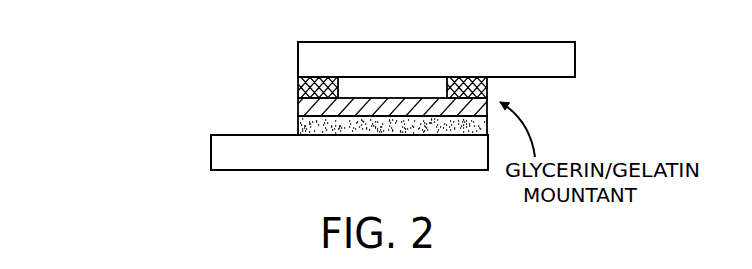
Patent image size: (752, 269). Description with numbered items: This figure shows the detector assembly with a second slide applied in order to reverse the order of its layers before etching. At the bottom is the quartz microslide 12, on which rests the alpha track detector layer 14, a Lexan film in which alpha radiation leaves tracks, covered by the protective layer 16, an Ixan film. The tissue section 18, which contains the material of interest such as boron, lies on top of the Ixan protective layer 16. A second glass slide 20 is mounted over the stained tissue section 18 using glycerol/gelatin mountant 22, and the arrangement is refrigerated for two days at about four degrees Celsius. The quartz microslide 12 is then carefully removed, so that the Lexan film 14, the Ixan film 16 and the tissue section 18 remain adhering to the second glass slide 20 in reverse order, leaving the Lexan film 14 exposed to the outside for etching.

The quartz microslide 12 is at (217, 161).
The alpha track detector layer 14 is at (300, 125).
The protective layer 16 is at (302, 113).
The tissue section 18 is at (428, 88).
The second glass slide 20 is at (575, 42).
The glycerol/gelatin mountant 22 is at (299, 82).